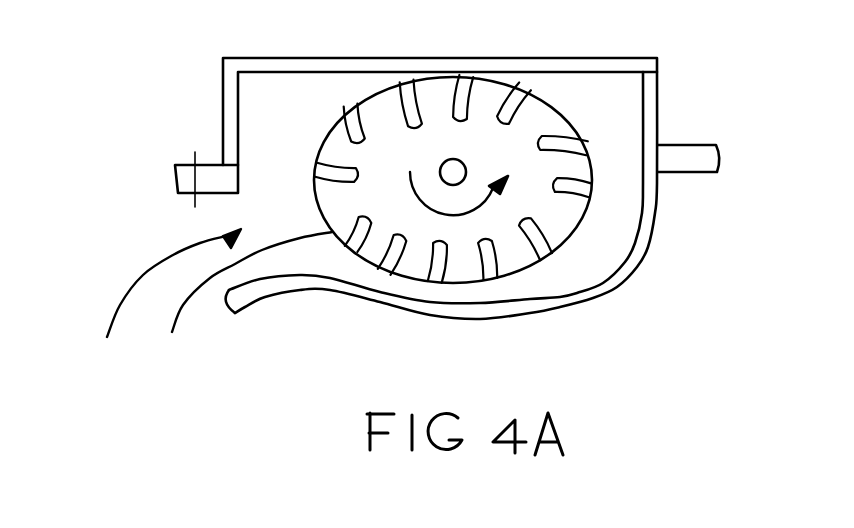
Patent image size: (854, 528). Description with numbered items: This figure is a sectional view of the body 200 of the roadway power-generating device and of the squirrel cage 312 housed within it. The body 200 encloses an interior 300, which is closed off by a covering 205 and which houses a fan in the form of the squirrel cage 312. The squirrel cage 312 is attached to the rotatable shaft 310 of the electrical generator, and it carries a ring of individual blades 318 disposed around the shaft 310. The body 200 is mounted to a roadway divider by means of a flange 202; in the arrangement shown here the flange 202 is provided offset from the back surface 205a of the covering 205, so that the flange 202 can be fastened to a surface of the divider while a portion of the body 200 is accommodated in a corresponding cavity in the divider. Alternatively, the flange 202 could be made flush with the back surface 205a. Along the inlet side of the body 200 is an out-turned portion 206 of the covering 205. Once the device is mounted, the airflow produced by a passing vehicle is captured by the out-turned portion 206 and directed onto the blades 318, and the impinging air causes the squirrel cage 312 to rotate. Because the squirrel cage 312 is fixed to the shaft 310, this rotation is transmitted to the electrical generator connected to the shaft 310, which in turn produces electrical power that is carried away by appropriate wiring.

The body 200 is at (446, 195).
The flange 202 is at (185, 165).
The covering 205 is at (578, 300).
The back surface of the covering 205a is at (260, 58).
The out-turned portion 206 is at (253, 305).
The interior 300 is at (480, 141).
The rotatable shaft 310 is at (448, 159).
The squirrel cage 312 is at (550, 107).
The blades 318 is at (219, 300).